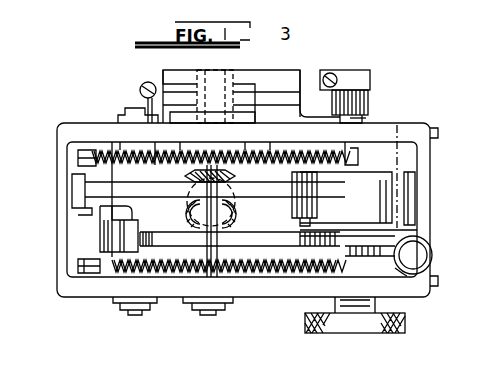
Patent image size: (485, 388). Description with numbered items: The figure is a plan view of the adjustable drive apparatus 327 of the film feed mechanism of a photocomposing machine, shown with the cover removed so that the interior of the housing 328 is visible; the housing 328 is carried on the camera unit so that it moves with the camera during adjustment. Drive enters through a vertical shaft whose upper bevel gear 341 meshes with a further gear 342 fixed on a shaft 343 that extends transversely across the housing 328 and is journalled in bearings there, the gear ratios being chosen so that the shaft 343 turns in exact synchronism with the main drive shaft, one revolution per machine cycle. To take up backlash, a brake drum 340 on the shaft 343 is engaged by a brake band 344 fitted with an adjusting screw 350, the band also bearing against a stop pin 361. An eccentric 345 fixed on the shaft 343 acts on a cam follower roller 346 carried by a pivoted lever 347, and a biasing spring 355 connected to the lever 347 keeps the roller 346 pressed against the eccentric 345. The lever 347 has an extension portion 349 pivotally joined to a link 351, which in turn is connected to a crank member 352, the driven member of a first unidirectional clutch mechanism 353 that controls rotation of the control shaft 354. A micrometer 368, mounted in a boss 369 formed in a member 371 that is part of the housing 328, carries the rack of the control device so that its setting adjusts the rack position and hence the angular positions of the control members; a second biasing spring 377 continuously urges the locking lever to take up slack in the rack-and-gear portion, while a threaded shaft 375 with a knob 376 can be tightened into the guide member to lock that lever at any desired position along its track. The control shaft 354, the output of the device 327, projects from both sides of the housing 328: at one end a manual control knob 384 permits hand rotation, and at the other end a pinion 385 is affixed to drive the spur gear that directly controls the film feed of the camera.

The adjustable drive apparatus 327 is at (81, 112).
The housing 328 is at (64, 294).
The brake drum 340 is at (251, 86).
The bevel gear 341 is at (215, 208).
The gear 342 is at (233, 180).
The shaft 343 is at (196, 220).
The brake band 344 is at (165, 98).
The eccentric 345 is at (245, 240).
The cam follower roller 346 is at (100, 258).
The lever 347 is at (105, 222).
The extension portion 349 is at (82, 200).
The adjusting screw 350 is at (142, 86).
The link 351 is at (85, 190).
The crank member 352 is at (400, 180).
The first unidirectional clutch mechanism 353 is at (410, 216).
The control shaft 354 is at (368, 118).
The biasing spring 355 is at (300, 162).
The stop pin 361 is at (142, 108).
The micrometer 368 is at (420, 256).
The boss 369 is at (403, 274).
The member 371 is at (425, 235).
The threaded shaft 375 is at (484, 112).
The knob 376 is at (352, 333).
The biasing spring 377 is at (268, 268).
The manual control knob 384 is at (484, 350).
The pinion 385 is at (352, 118).